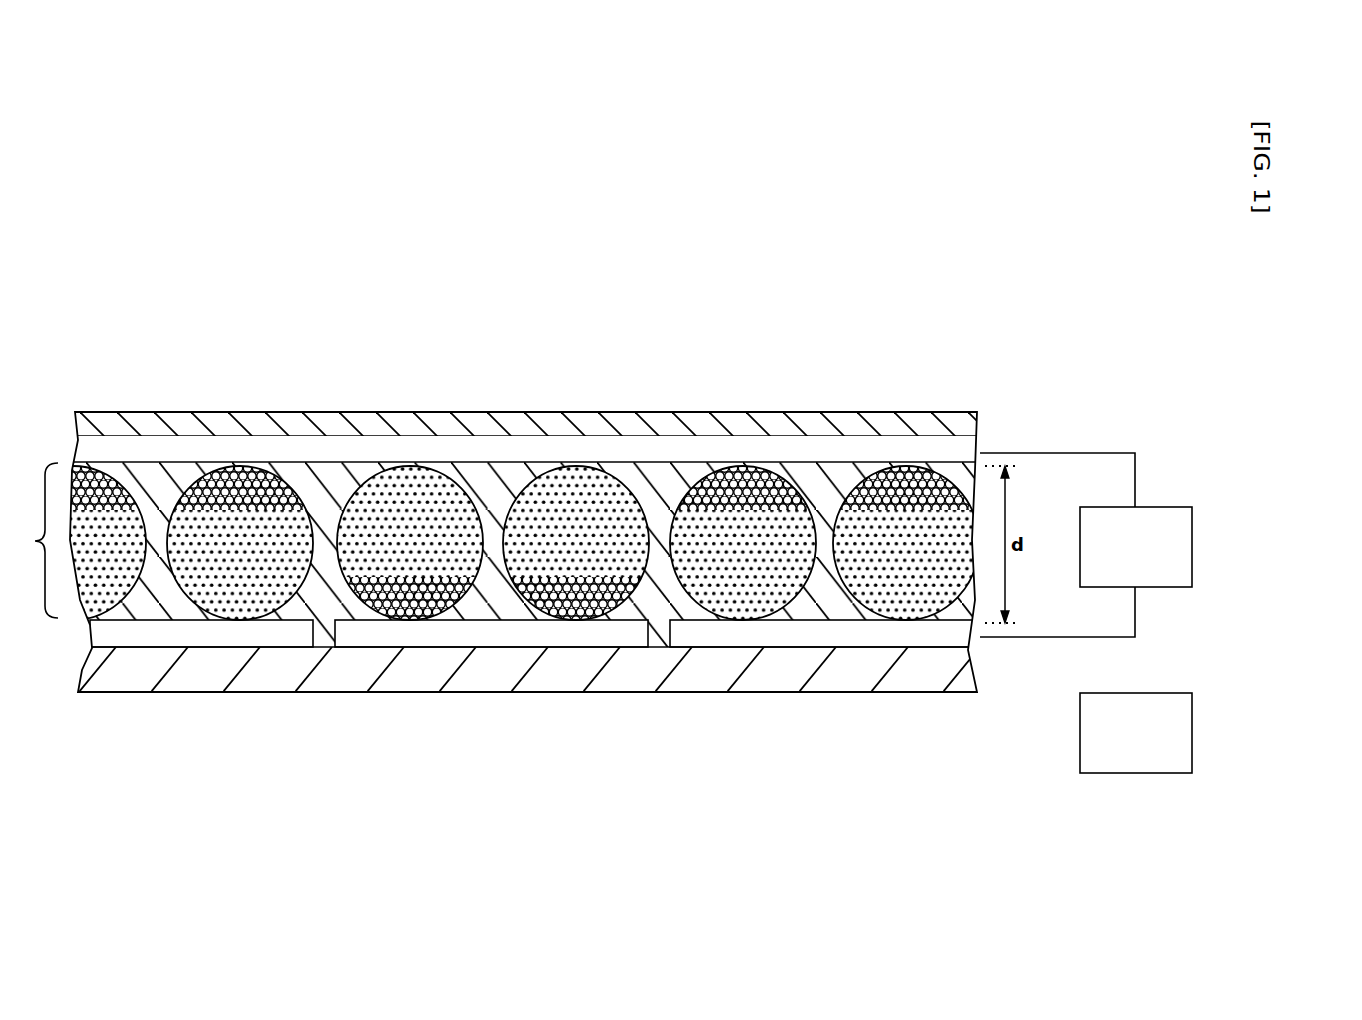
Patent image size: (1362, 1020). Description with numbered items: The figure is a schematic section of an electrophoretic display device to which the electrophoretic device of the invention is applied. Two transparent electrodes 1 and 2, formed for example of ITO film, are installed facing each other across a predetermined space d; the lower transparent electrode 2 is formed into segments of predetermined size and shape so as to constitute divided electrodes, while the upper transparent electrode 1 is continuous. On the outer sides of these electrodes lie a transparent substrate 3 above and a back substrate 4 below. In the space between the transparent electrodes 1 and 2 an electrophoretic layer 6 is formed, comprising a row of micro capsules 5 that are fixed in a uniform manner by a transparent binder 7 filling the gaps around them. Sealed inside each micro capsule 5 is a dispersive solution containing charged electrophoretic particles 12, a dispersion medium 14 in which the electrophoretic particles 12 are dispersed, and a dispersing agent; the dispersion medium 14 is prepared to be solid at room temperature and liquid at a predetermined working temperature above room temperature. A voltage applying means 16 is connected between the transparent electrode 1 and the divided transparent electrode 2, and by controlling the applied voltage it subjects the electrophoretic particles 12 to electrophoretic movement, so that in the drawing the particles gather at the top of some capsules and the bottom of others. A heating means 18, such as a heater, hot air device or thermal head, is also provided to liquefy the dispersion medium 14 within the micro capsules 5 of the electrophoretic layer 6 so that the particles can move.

The transparent electrode 1 is at (252, 452).
The transparent electrode 2 is at (207, 633).
The transparent substrate 3 is at (176, 421).
The back substrate 4 is at (627, 677).
The micro capsule 5 is at (492, 510).
The electrophoretic layer 6 is at (489, 550).
The transparent binder 7 is at (497, 590).
The electrophoretic particles 12 is at (397, 575).
The dispersion medium 14 is at (328, 590).
The voltage applying means 16 is at (1177, 505).
The heating means 18 is at (1178, 692).